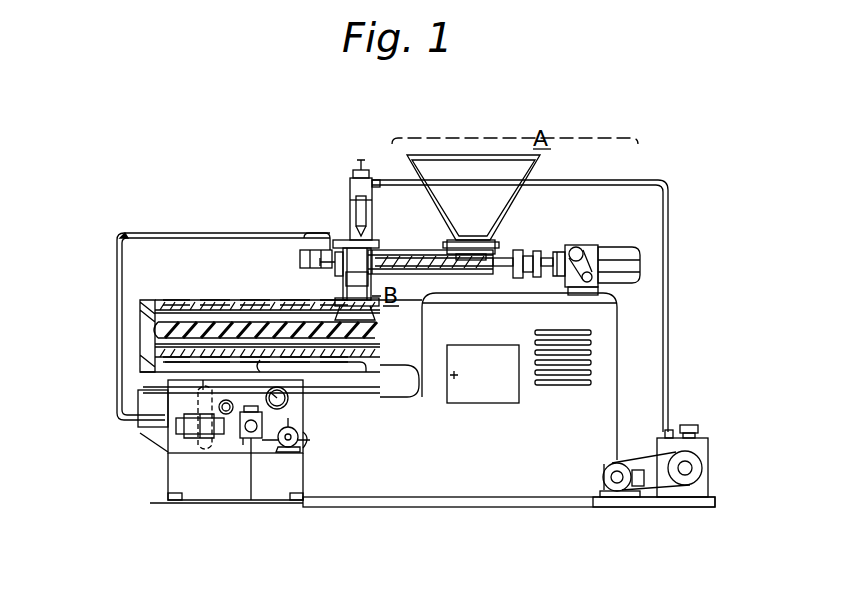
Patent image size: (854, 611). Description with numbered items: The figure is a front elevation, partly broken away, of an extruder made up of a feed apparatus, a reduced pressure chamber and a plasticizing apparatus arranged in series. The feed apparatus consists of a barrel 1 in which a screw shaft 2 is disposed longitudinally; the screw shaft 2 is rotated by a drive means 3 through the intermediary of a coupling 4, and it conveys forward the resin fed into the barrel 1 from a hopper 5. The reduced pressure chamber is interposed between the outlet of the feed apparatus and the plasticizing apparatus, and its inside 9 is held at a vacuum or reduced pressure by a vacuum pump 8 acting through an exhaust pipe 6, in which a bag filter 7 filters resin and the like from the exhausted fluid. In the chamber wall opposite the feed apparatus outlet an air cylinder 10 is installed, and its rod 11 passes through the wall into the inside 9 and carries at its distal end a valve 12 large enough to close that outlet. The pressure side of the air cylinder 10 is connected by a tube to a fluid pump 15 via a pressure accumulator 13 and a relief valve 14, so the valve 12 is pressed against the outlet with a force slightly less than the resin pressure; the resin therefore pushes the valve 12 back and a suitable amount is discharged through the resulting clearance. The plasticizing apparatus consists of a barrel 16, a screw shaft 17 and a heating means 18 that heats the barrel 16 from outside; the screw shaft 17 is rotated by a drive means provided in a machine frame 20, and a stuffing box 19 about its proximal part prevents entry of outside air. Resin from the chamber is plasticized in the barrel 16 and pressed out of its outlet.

The barrel 1 is at (393, 250).
The screw shaft 2 is at (406, 258).
The drive means 3 is at (616, 250).
The coupling 4 is at (520, 253).
The hopper 5 is at (533, 173).
The exhaust pipe 6 is at (348, 205).
The bag filter 7 is at (352, 180).
The vacuum pump 8 is at (686, 430).
The inside of the reduced pressure chamber 9 is at (345, 284).
The air cylinder 10 is at (304, 250).
The rod 11 is at (338, 247).
The valve 12 is at (346, 240).
The pressure accumulator 13 is at (197, 453).
The relief valve 14 is at (245, 470).
The fluid pump 15 is at (290, 455).
The barrel 16 is at (168, 300).
The screw shaft 17 is at (188, 300).
The heating means 18 is at (211, 300).
The stuffing box 19 is at (350, 297).
The machine frame 20 is at (350, 482).